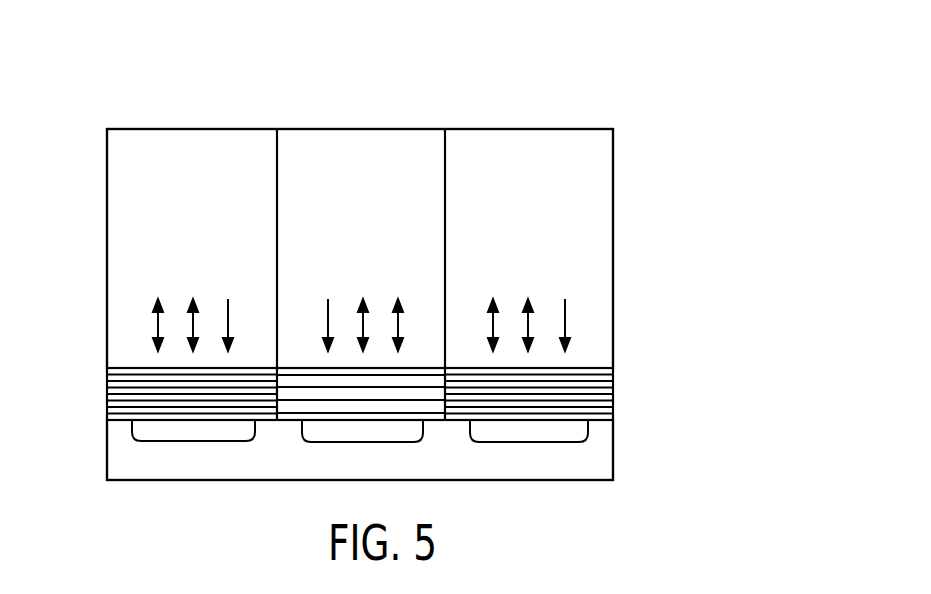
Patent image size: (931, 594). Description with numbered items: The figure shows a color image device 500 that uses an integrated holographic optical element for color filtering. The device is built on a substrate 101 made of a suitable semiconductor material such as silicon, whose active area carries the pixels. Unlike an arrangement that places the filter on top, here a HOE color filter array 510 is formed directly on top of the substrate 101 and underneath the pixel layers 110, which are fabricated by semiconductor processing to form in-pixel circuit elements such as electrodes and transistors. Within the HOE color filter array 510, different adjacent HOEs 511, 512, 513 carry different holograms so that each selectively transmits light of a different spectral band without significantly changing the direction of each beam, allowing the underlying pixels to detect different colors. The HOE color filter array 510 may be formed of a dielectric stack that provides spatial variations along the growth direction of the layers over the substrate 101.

The color image device 500 is at (140, 62).
The pixel layers 110 is at (626, 129).
The HOE color filter array 510 is at (613, 395).
The HOE 511 is at (240, 368).
The HOE 512 is at (407, 368).
The HOE 513 is at (575, 368).
The substrate 101 is at (613, 443).